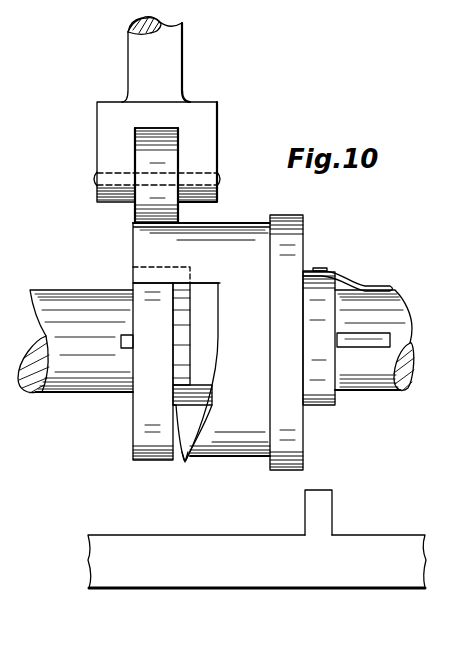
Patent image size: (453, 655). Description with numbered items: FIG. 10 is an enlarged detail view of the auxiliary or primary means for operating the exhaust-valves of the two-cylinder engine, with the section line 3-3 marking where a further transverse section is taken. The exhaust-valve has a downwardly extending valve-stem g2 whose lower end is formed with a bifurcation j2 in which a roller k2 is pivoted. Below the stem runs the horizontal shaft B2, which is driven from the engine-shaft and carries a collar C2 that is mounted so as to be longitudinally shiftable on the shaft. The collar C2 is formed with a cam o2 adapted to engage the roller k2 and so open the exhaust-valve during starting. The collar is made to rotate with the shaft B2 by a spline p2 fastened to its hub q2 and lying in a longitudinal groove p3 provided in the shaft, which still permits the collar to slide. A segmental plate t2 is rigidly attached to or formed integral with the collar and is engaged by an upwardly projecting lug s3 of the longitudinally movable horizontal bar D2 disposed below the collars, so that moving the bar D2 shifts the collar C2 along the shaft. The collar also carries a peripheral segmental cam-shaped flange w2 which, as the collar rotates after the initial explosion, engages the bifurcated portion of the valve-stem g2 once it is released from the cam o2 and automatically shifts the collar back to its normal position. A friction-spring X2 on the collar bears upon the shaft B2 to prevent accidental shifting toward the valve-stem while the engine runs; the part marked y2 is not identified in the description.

The line 3- 3 is at (131, 283).
The valve-stem g2 is at (173, 70).
The bifurcation j2 is at (198, 165).
The roller k2 is at (170, 157).
The collar C2 is at (201, 339).
The cam o2 is at (202, 244).
The hidden recess y2 is at (191, 267).
The segmental plate t2 is at (218, 342).
The hub q2 is at (195, 371).
The peripheral segmental cam-shaped flange w2 is at (181, 462).
The horizontal shaft B2 is at (88, 372).
The spline p2 is at (342, 347).
The longitudinal groove p3 is at (388, 340).
The friction-spring X2 is at (352, 278).
The lug s3 is at (333, 505).
The horizontal bar D2 is at (257, 561).